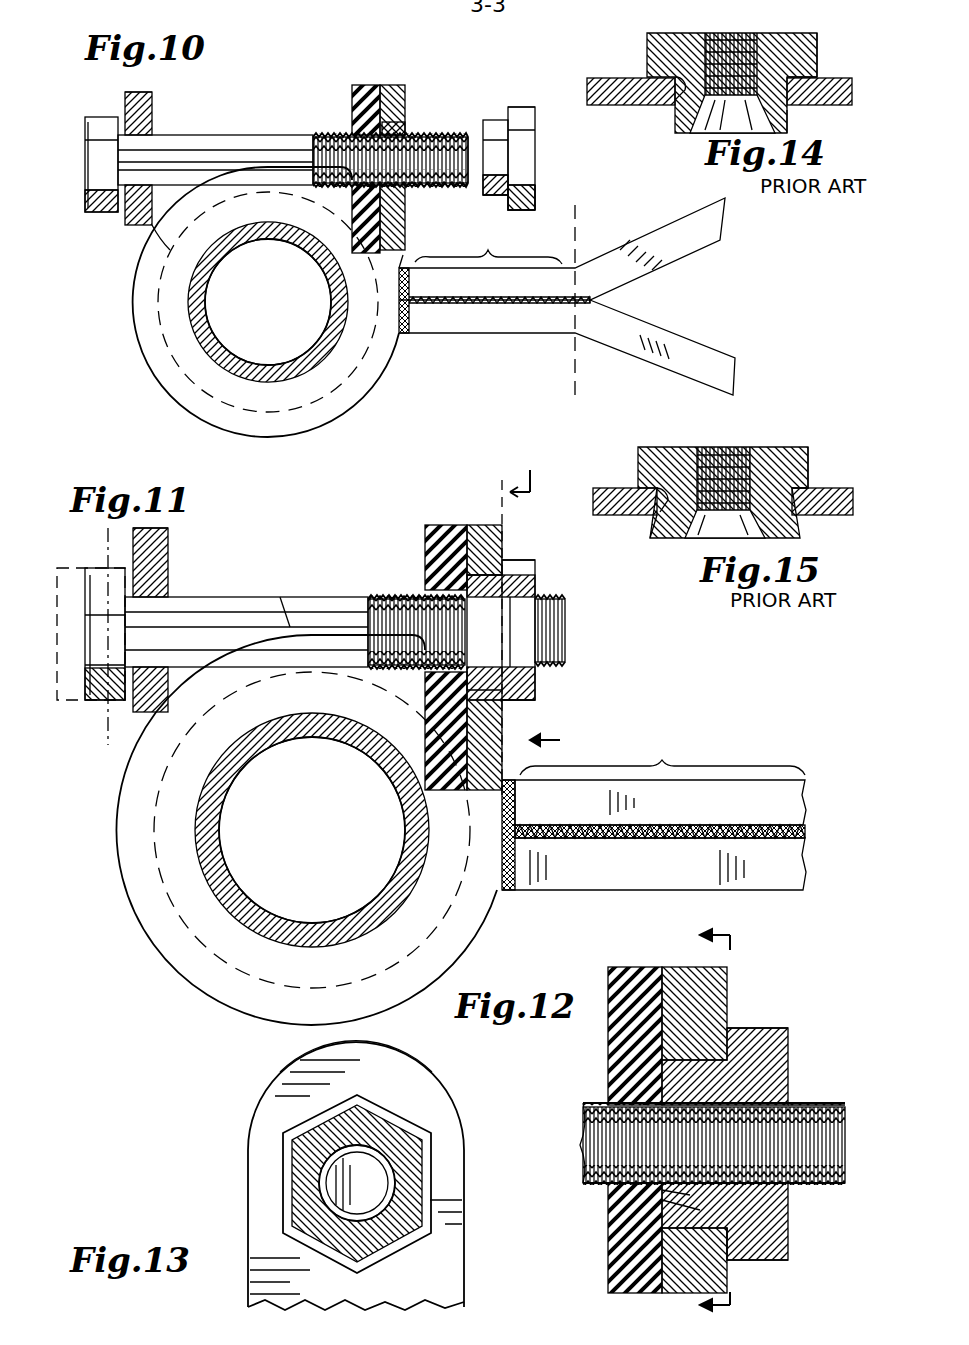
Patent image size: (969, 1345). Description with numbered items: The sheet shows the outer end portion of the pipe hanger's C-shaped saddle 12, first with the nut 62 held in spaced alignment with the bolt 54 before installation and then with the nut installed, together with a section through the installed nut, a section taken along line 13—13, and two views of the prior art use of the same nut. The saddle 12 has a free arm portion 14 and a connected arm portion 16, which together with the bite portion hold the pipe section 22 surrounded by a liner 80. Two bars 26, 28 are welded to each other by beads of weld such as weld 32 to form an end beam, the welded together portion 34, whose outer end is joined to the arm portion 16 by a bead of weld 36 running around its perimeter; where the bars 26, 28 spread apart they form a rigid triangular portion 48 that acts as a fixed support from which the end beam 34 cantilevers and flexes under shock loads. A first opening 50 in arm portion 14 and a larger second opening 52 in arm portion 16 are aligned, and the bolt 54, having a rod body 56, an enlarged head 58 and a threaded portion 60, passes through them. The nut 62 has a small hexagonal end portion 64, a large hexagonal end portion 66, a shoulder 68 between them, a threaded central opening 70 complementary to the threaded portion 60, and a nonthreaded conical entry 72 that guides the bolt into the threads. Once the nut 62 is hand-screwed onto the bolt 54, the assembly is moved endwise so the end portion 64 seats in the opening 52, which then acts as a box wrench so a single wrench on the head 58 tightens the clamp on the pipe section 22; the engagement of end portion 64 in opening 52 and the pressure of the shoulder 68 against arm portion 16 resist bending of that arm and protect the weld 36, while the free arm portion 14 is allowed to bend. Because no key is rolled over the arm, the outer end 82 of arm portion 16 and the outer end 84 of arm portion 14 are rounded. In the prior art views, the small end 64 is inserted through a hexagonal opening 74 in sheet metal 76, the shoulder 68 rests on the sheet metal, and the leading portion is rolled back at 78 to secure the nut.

In FIG. 11, the saddle 12 is at (540, 626).
In FIG. 12, the section line 13— 13 is at (735, 1125).
In FIG. 10, the arm portion 14 is at (152, 112).
In FIG. 11, the arm portion 14 is at (168, 550).
In FIG. 10, the arm portion 16 is at (405, 92).
In FIG. 11, the arm portion 16 is at (502, 540).
In FIG. 13, the arm portion 16 is at (280, 1075).
In FIG. 10, the pipe section 22 is at (195, 318).
In FIG. 11, the pipe section 22 is at (215, 905).
In FIG. 10, the bar 26 is at (648, 245).
In FIG. 11, the bar 26 is at (748, 795).
In FIG. 10, the bar 28 is at (680, 352).
In FIG. 11, the bar 28 is at (560, 892).
In FIG. 10, the bead of weld 32 is at (482, 312).
In FIG. 11, the bead of weld 32 is at (655, 842).
In FIG. 10, the welded together portion 34 is at (488, 241).
In FIG. 11, the welded together portion 34 is at (662, 745).
In FIG. 10, the bead of weld 36 is at (403, 340).
In FIG. 11, the bead of weld 36 is at (508, 835).
In FIG. 10, the rigid triangular portion 48 is at (575, 372).
In FIG. 10, the first opening 50 is at (160, 130).
In FIG. 11, the first opening 50 is at (168, 590).
In FIG. 10, the second opening 52 is at (405, 128).
In FIG. 11, the second opening 52 is at (425, 565).
In FIG. 13, the second opening 52 is at (285, 1180).
In FIG. 12, the second opening 52 is at (640, 1065).
In FIG. 10, the bolt 54 is at (265, 135).
In FIG. 11, the bolt 54 is at (245, 597).
In FIG. 10, the rod body 56 is at (150, 230).
In FIG. 11, the rod body 56 is at (285, 600).
In FIG. 10, the enlarged head 58 is at (108, 212).
In FIG. 11, the enlarged head 58 is at (110, 700).
In FIG. 10, the threaded portion 60 is at (450, 135).
In FIG. 11, the threaded portion 60 is at (568, 630).
In FIG. 13, the threaded portion 60 is at (370, 1180).
In FIG. 12, the threaded portion 60 is at (590, 1183).
In FIG. 10, the nut 62 is at (540, 152).
In FIG. 14, the nut 62 is at (665, 33).
In FIG. 15, the nut 62 is at (645, 447).
In FIG. 11, the nut 62 is at (515, 585).
In FIG. 12, the nut 62 is at (780, 1020).
In FIG. 10, the first small end portion 64 is at (515, 107).
In FIG. 14, the first small end portion 64 is at (790, 115).
In FIG. 11, the first small end portion 64 is at (530, 600).
In FIG. 12, the first small end portion 64 is at (730, 1250).
In FIG. 10, the second large end portion 66 is at (535, 198).
In FIG. 14, the second large end portion 66 is at (810, 47).
In FIG. 15, the second large end portion 66 is at (780, 447).
In FIG. 11, the second large end portion 66 is at (515, 712).
In FIG. 12, the second large end portion 66 is at (745, 1035).
In FIG. 10, the shoulder 68 is at (505, 210).
In FIG. 14, the shoulder 68 is at (830, 82).
In FIG. 15, the shoulder 68 is at (818, 488).
In FIG. 12, the shoulder 68 is at (680, 975).
In FIG. 14, the threaded central opening 70 is at (728, 35).
In FIG. 15, the threaded central opening 70 is at (722, 447).
In FIG. 13, the threaded central opening 70 is at (380, 1205).
In FIG. 12, the threaded central opening 70 is at (800, 1103).
In FIG. 14, the nonthreaded conical entry 72 is at (700, 133).
In FIG. 15, the nonthreaded conical entry 72 is at (770, 540).
In FIG. 12, the nonthreaded conical entry 72 is at (610, 1238).
In FIG. 14, the hexagonal opening 74 is at (675, 100).
In FIG. 15, the hexagonal opening 74 is at (660, 515).
In FIG. 14, the sheet metal 76 is at (600, 80).
In FIG. 15, the sheet metal 76 is at (603, 488).
In FIG. 15, the rolled back end portion 78 is at (660, 540).
In FIG. 10, the liner 80 is at (165, 380).
In FIG. 11, the liner 80 is at (312, 830).
In FIG. 10, the outer end 82 is at (380, 88).
In FIG. 13, the outer end 82 is at (400, 1048).
In FIG. 10, the outer end 84 is at (140, 92).
In FIG. 11, the outer end 84 is at (158, 528).